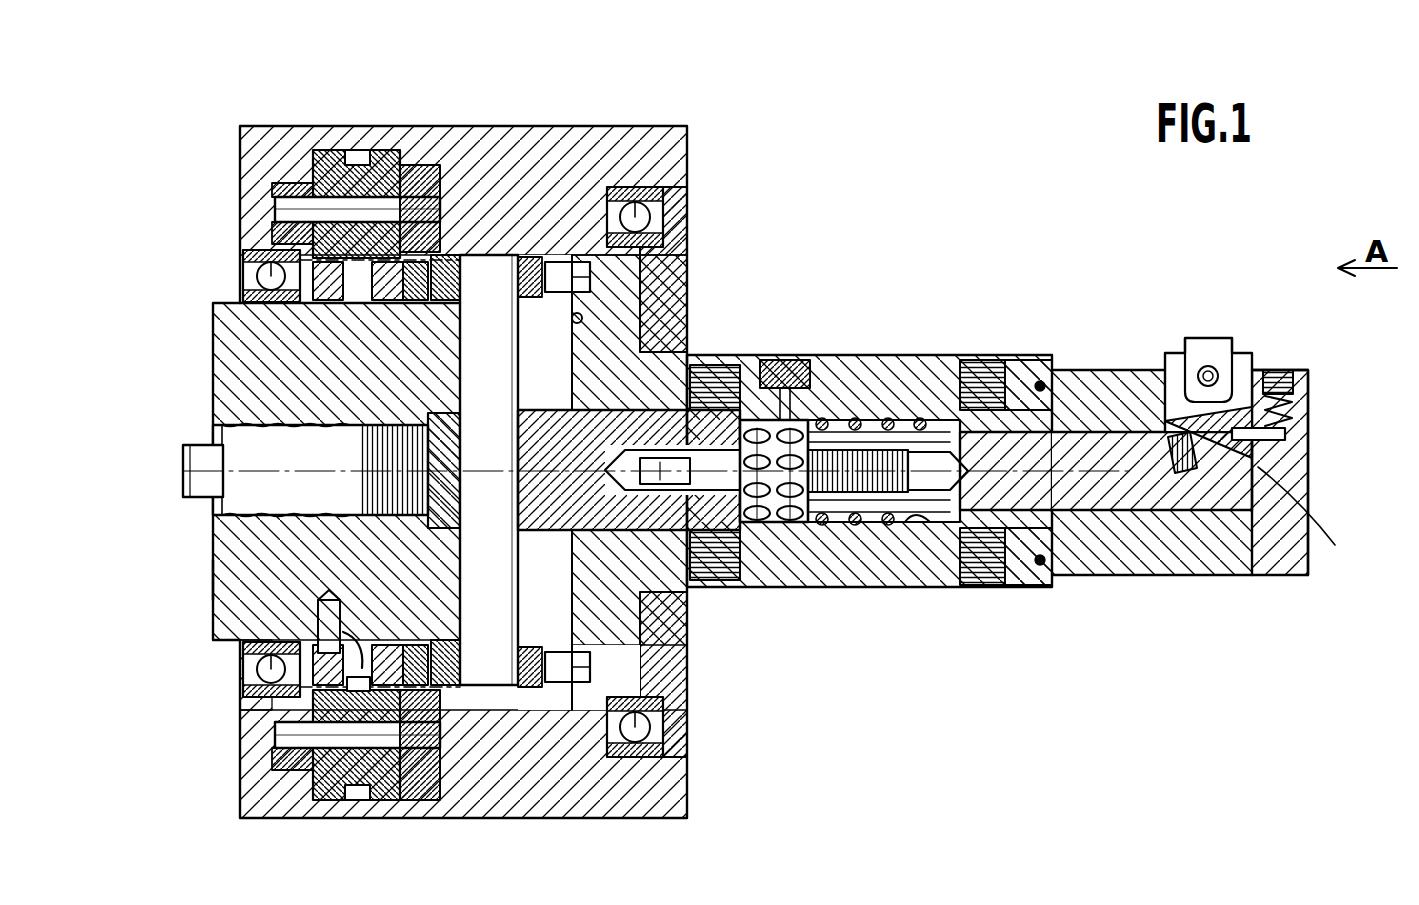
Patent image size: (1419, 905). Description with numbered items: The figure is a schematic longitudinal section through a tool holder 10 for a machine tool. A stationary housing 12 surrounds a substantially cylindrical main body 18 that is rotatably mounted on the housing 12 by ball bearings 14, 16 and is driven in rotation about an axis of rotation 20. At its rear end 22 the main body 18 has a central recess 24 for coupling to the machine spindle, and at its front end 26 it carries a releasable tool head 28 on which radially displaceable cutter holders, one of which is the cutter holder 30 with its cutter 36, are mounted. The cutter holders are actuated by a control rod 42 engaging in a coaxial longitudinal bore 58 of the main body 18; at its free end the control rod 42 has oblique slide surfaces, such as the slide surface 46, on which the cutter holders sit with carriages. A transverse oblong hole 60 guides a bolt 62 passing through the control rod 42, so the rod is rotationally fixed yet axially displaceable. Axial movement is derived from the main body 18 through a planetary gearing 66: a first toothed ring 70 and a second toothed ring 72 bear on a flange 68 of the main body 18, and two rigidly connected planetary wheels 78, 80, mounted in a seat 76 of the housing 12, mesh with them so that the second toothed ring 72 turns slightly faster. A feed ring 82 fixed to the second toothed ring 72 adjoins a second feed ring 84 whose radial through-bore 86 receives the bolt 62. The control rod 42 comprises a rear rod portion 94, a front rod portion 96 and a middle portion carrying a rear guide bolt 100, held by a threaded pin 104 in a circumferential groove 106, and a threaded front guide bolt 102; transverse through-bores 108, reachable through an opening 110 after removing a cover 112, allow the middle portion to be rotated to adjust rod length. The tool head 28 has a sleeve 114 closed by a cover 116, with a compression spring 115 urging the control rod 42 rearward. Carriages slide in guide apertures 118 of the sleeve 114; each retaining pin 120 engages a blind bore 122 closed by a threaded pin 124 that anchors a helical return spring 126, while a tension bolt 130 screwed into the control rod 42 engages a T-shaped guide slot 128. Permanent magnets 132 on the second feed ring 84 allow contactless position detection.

The tool holder 10 is at (1014, 240).
The housing 12 is at (664, 120).
The ball bearing 14 is at (262, 272).
The ball bearing 16 is at (688, 160).
The main body 18 is at (211, 578).
The axis of rotation 20 is at (185, 472).
The rear end 22 is at (213, 345).
The central recess 24 is at (232, 438).
The front end 26 is at (1055, 362).
The tool head 28 is at (1093, 362).
The cutter holder 30 is at (1262, 346).
The cutter 36 is at (1222, 340).
The control rod 42 is at (1088, 514).
The slide surface 46 is at (1172, 434).
The longitudinal bore 58 is at (905, 522).
The oblong hole 60 is at (583, 318).
The bolt 62 is at (490, 690).
The planetary gearing 66 is at (357, 800).
The flange 68 is at (312, 630).
The first toothed ring 70 is at (262, 670).
The second toothed ring 72 is at (412, 770).
The seat 76 is at (362, 192).
The planetary wheel 78 is at (332, 148).
The planetary wheel 80 is at (398, 150).
The feed ring 82 is at (432, 240).
The second feed ring 84 is at (472, 258).
The radial through-bore 86 is at (520, 262).
The rear rod portion 94 is at (652, 400).
The front rod portion 96 is at (1138, 490).
The rear guide bolt 100 is at (675, 490).
The front guide bolt 102 is at (935, 522).
The threaded pin 104 is at (745, 368).
The circumferential groove 106 is at (760, 522).
The through-bores 108 is at (832, 505).
The opening 110 is at (875, 357).
The cover 112 is at (800, 398).
The sleeve 114 is at (1205, 548).
The compression spring 115 is at (862, 520).
The cover 116 is at (1295, 558).
The guide apertures 118 is at (1208, 338).
The retaining pin 120 is at (1290, 447).
The blind bore 122 is at (1282, 402).
The threaded pin 124 is at (1275, 372).
The helical return spring 126 is at (1292, 414).
The T-shaped guide slot 128 is at (1290, 500).
The tension bolt 130 is at (1308, 540).
The permanent magnets 132 is at (590, 276).